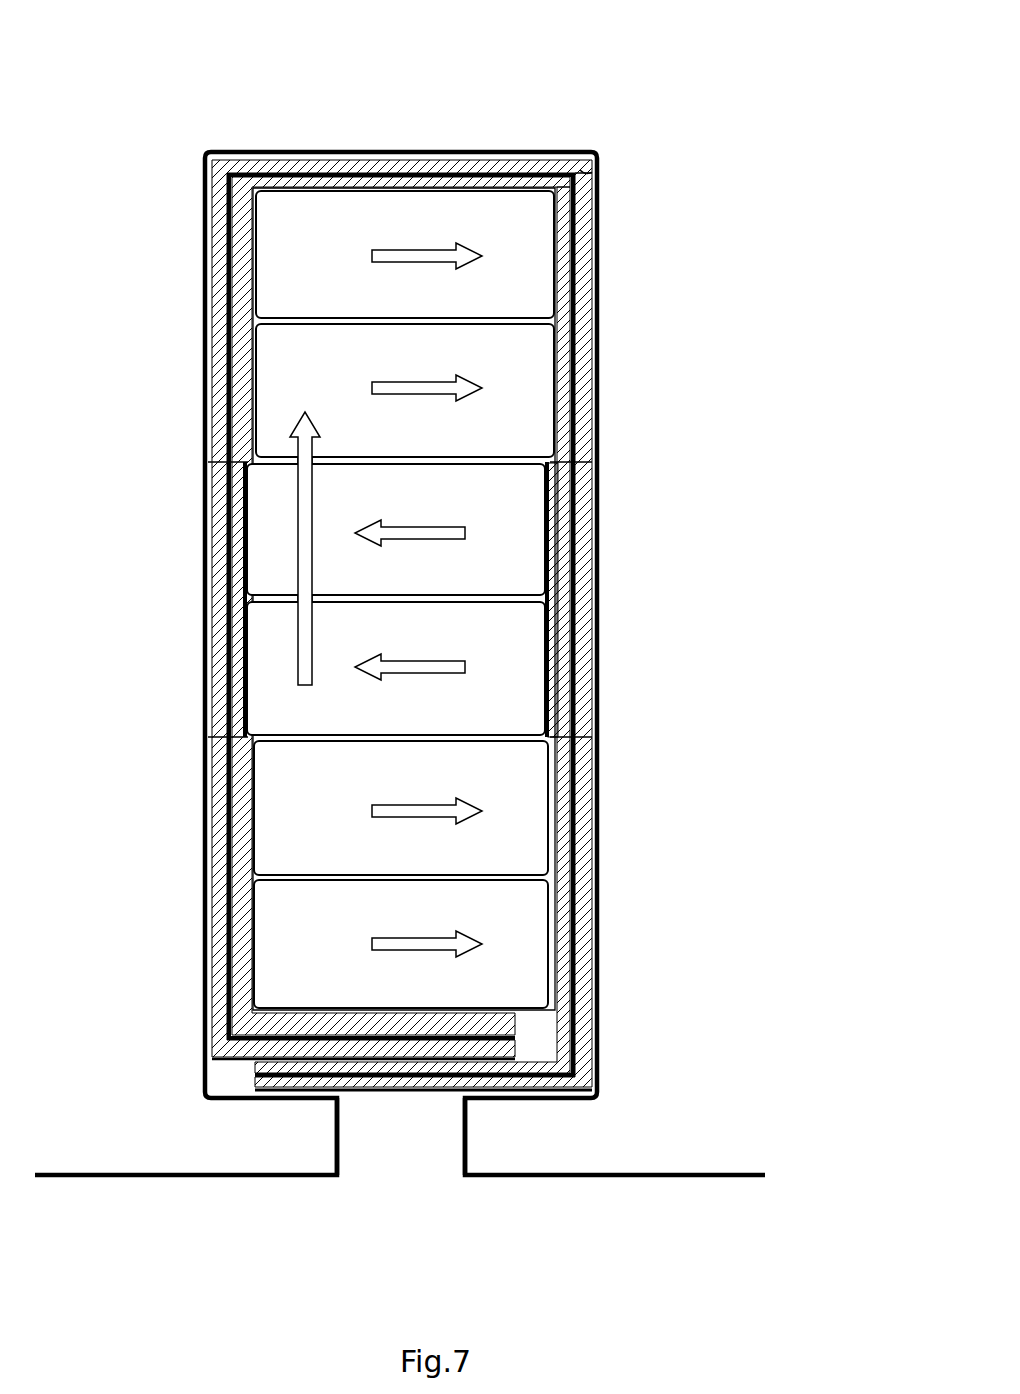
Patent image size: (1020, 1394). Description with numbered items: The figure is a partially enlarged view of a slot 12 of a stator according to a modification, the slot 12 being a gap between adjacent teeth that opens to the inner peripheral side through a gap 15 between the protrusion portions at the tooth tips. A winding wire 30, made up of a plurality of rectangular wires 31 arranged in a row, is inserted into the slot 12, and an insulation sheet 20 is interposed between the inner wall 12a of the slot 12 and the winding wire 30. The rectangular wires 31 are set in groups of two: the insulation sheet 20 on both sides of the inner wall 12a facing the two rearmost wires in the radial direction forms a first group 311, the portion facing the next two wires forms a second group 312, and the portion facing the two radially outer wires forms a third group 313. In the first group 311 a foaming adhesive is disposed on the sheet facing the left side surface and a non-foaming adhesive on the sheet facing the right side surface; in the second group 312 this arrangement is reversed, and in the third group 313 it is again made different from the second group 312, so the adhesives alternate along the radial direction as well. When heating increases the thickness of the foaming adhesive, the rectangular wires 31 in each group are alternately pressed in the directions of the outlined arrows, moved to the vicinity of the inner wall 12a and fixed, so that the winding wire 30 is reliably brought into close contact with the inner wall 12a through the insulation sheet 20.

The slot 12 is at (370, 152).
The inner wall 12a is at (578, 170).
The gap 15 is at (395, 1128).
The insulation sheet 20 is at (578, 245).
The winding wire 30 is at (277, 238).
The rectangular wire 31 is at (515, 408).
The first group 311 is at (450, 324).
The second group 312 is at (163, 470).
The third group 313 is at (163, 750).